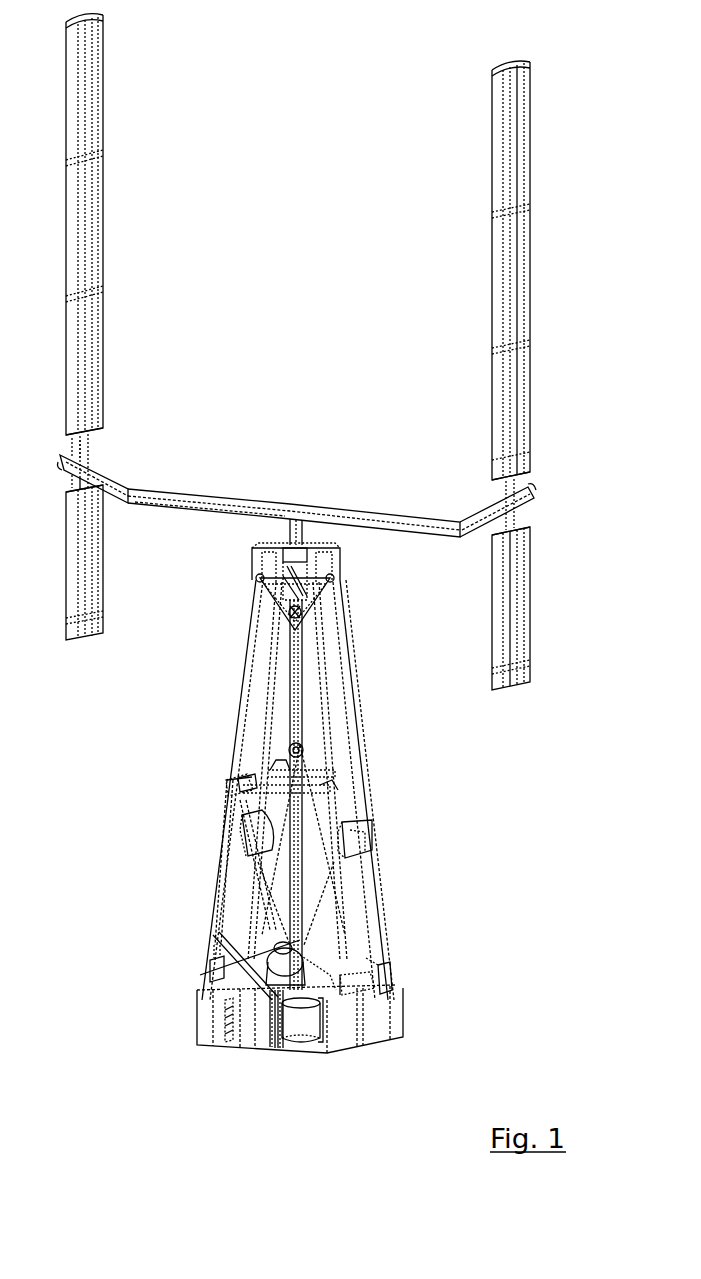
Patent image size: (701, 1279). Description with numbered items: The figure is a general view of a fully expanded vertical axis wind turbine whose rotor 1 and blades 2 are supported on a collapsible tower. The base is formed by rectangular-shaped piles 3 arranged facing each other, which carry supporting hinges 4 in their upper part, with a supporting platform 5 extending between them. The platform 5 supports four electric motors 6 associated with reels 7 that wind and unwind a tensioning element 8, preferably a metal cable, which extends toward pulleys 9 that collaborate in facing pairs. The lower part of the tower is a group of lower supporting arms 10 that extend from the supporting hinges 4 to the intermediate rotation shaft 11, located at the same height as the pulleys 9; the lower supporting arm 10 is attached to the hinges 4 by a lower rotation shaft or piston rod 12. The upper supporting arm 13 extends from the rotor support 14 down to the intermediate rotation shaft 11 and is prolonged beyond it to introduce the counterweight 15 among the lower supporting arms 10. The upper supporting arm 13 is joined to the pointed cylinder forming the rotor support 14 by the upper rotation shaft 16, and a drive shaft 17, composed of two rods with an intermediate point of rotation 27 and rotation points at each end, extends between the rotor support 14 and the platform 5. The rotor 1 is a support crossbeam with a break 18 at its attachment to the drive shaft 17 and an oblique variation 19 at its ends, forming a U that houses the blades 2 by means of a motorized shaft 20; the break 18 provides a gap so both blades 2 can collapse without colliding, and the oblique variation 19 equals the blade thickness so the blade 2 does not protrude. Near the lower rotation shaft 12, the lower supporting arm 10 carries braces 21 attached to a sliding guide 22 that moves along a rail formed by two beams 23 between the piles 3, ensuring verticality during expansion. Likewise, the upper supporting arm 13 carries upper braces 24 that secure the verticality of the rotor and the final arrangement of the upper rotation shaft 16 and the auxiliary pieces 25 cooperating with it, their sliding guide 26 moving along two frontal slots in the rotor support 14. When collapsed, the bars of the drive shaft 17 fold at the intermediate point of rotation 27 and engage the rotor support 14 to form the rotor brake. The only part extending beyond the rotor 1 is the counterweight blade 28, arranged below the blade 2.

The rotor 1 is at (200, 490).
The blade 2 is at (522, 268).
The pile 3 is at (199, 1035).
The supporting hinge 4 is at (384, 982).
The supporting platform 5 is at (365, 985).
The electric motor 6 is at (322, 948).
The reel 7 is at (275, 962).
The tensioning element 8 is at (264, 860).
The pulley 9 is at (243, 781).
The lower supporting arm 10 is at (228, 797).
The intermediate rotation shaft 11 is at (338, 784).
The lower rotation shaft 12 is at (216, 966).
The upper supporting arm 13 is at (256, 636).
The rotor support 14 is at (300, 573).
The counterweight 15 is at (365, 832).
The upper rotation shaft 16 is at (285, 553).
The drive shaft 17 is at (302, 684).
The break 18 is at (270, 512).
The oblique variation 19 is at (108, 462).
The motorized shaft 20 is at (532, 489).
The brace 21 is at (370, 930).
The sliding guide 22 is at (273, 1012).
The beam 23 is at (282, 1040).
The upper brace 24 is at (268, 593).
The auxiliary piece 25 is at (304, 548).
The sliding guide 26 is at (296, 616).
The intermediate point of rotation 27 is at (305, 752).
The counterweight blade 28 is at (520, 604).